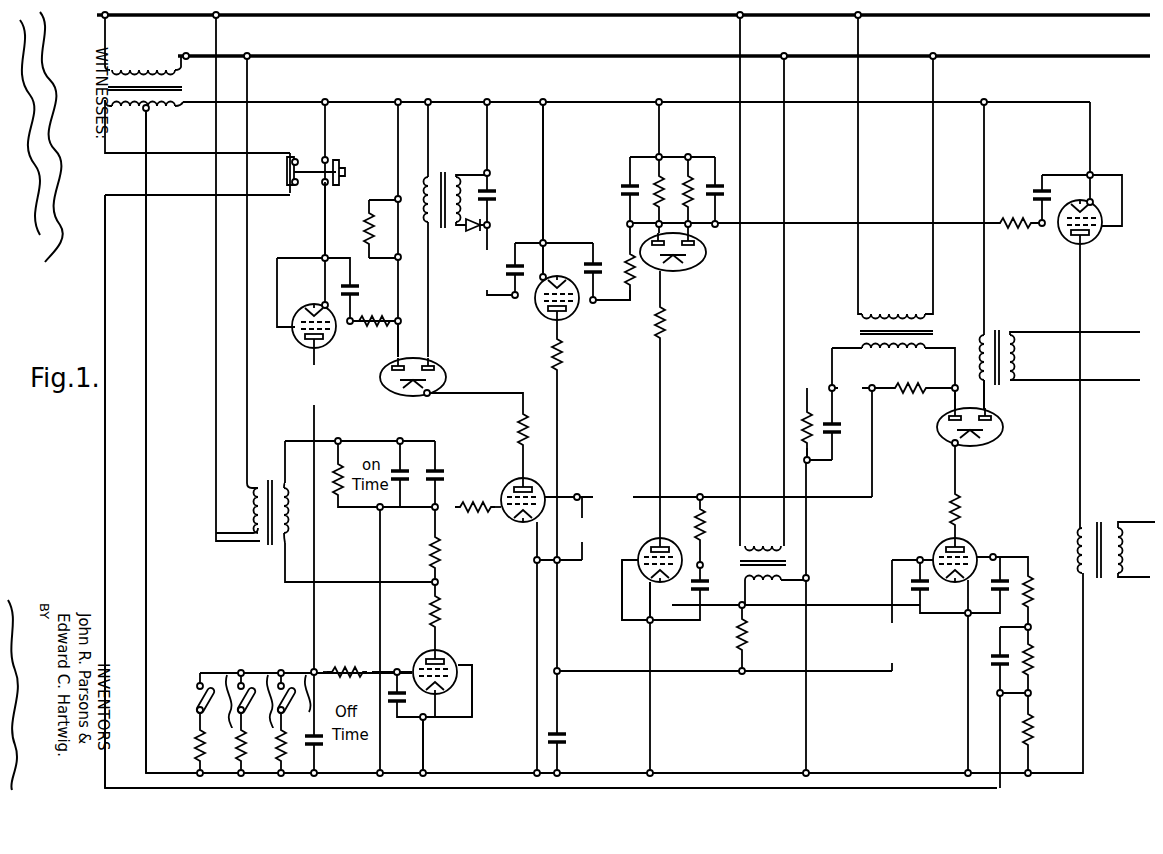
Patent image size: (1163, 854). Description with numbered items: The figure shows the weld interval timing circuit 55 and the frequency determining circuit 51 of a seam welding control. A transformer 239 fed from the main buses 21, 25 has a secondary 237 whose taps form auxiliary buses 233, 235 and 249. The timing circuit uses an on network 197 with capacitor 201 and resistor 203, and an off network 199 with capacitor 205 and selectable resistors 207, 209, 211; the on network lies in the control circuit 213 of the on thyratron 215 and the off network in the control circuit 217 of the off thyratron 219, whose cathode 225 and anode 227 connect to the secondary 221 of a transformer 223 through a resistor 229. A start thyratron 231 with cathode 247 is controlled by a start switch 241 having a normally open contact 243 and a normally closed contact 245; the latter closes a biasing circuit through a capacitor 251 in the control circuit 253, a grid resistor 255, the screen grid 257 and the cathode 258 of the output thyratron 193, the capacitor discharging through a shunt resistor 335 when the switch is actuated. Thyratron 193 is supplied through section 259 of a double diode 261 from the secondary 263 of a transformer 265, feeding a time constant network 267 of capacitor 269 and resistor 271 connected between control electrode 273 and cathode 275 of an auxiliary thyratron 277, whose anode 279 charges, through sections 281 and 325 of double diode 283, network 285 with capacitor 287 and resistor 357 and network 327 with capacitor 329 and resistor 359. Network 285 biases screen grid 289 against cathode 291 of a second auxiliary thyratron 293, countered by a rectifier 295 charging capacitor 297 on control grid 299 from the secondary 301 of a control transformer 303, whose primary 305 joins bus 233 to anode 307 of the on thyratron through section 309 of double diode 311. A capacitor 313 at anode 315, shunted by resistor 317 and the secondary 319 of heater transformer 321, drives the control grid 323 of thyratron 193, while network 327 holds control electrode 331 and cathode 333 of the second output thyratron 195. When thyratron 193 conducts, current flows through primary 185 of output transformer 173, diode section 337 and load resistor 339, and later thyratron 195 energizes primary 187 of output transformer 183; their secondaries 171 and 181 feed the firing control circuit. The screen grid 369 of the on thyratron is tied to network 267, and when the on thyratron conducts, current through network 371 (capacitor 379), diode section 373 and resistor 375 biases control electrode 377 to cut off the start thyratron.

The bus 21 is at (1118, 12).
The bus 25 is at (1116, 55).
The frequency determining circuit 51 is at (1018, 78).
The timing circuit 55 is at (507, 46).
The secondary 171 is at (1018, 350).
The output transformer 173 is at (1017, 322).
The secondary 181 is at (1133, 562).
The output transformer 183 is at (1118, 515).
The primary 185 is at (976, 341).
The primary 187 is at (1072, 540).
The output thyratron 193 is at (969, 543).
The output thyratron 195 is at (1102, 239).
The time constant network 197 is at (397, 434).
The time constant network 199 is at (362, 662).
The capacitor 201 is at (405, 489).
The resistor 203 is at (337, 497).
The capacitor 205 is at (320, 740).
The resistor 207 is at (274, 710).
The resistor 209 is at (231, 710).
The resistor 211 is at (194, 738).
The control circuit 213 is at (493, 580).
The on thyratron 215 is at (502, 490).
The control circuit 217 is at (412, 755).
The off thyratron 219 is at (449, 653).
The secondary 221 is at (250, 502).
The transformer 223 is at (280, 564).
The cathode 225 is at (450, 696).
The anode 227 is at (423, 655).
The resistor 229 is at (441, 607).
The start thyratron 231 is at (292, 343).
The auxiliary bus 233 is at (363, 102).
The auxiliary bus 235 is at (148, 458).
The secondary 237 is at (164, 110).
The transformer 239 is at (208, 124).
The switch 241 is at (310, 232).
The normally open contact 243 is at (330, 161).
The normally closed contact 245 is at (288, 174).
The cathode 247 is at (302, 308).
The auxiliary bus 249 is at (105, 466).
The biasing capacitor 251 is at (987, 662).
The control circuit 253 is at (965, 657).
The grid resistor 255 is at (1034, 600).
The screen grid 257 is at (980, 553).
The cathode 258 is at (964, 590).
The section 259 is at (940, 413).
The double diode 261 is at (1003, 427).
The secondary 263 is at (902, 352).
The transformer 265 is at (855, 342).
The time constant network 267 is at (852, 482).
The capacitor 269 is at (836, 432).
The resistor 271 is at (801, 407).
The control electrode 273 is at (681, 547).
The cathode 275 is at (635, 579).
The auxiliary thyratron 277 is at (645, 556).
The anode 279 is at (656, 538).
The section 281 is at (644, 323).
The double diode 283 is at (639, 296).
The time constant network 285 is at (643, 135).
The capacitor 287 is at (624, 190).
The screen grid 289 is at (584, 310).
The cathode 291 is at (566, 278).
The auxiliary thyratron 293 is at (537, 320).
The rectifier 295 is at (476, 234).
The capacitor 297 is at (496, 198).
The control grid 299 is at (522, 302).
The secondary 301 is at (462, 172).
The control transformer 303 is at (463, 249).
The primary 305 is at (436, 175).
The anode 307 is at (517, 487).
The section 309 is at (428, 362).
The double diode 311 is at (477, 389).
The capacitor 313 is at (566, 740).
The anode 315 is at (564, 336).
The resistor 317 is at (748, 638).
The secondary 319 is at (762, 582).
The heater transformer 321 is at (737, 580).
The control grid 323 is at (933, 557).
The section 325 is at (691, 255).
The time constant network 327 is at (703, 132).
The capacitor 329 is at (723, 190).
The control electrode 331 is at (1057, 228).
The cathode 333 is at (1066, 202).
The shunt resistor 335 is at (1033, 661).
The section 337 is at (994, 412).
The load resistor 339 is at (961, 501).
The resistor 357 is at (656, 166).
The resistor 359 is at (688, 164).
The screen grid 369 is at (506, 513).
The time constant network 371 is at (388, 197).
The section 373 is at (390, 367).
The resistor 375 is at (516, 425).
The control electrode 377 is at (354, 326).
The capacitor 379 is at (353, 286).